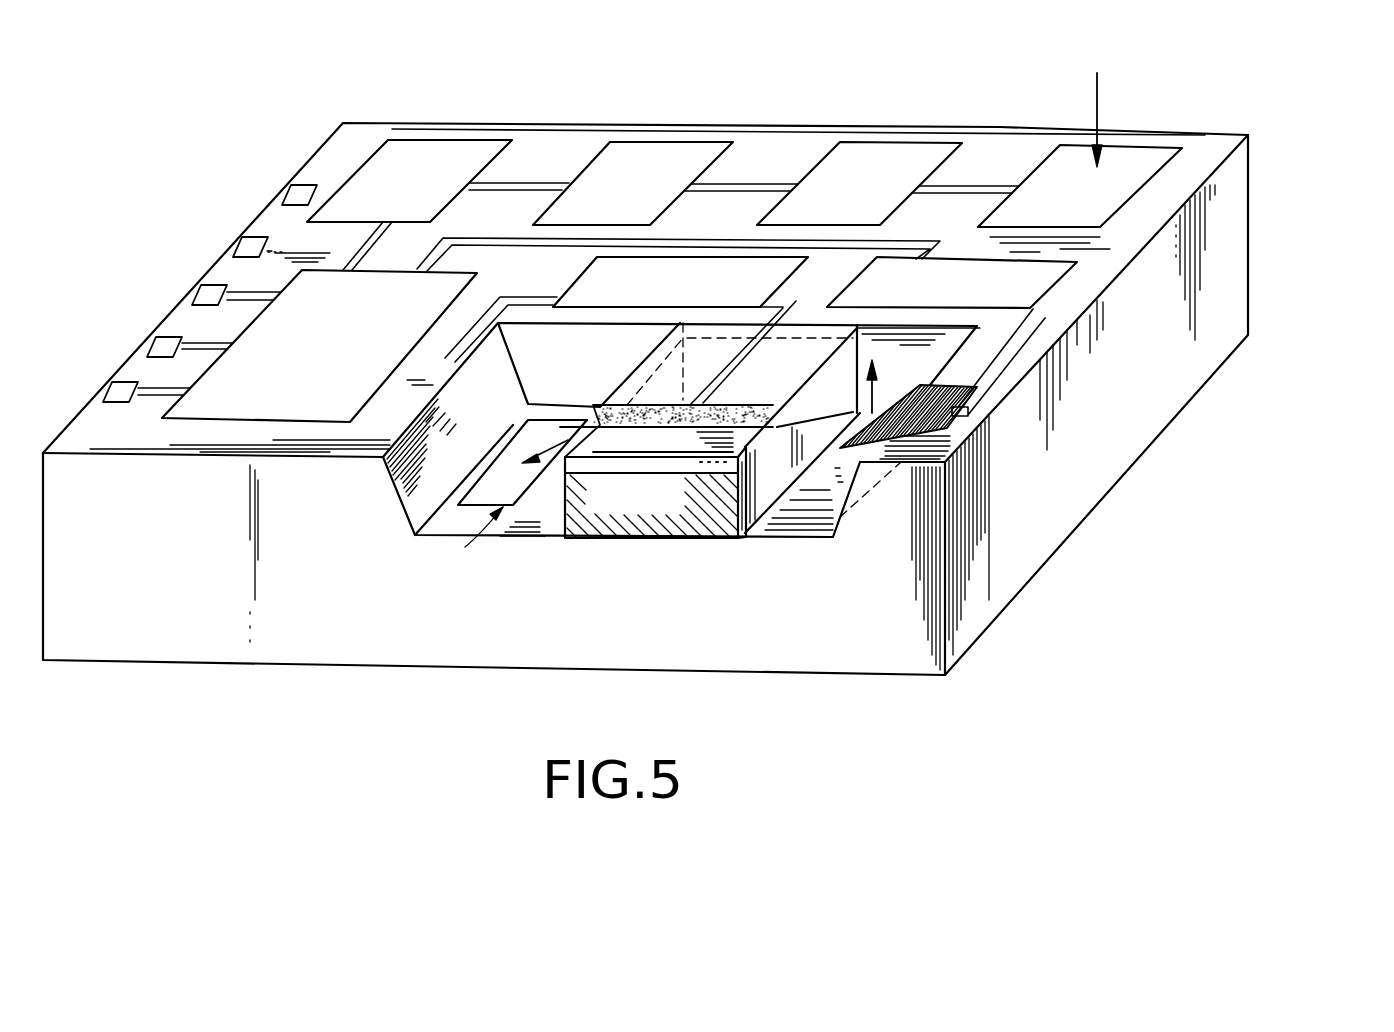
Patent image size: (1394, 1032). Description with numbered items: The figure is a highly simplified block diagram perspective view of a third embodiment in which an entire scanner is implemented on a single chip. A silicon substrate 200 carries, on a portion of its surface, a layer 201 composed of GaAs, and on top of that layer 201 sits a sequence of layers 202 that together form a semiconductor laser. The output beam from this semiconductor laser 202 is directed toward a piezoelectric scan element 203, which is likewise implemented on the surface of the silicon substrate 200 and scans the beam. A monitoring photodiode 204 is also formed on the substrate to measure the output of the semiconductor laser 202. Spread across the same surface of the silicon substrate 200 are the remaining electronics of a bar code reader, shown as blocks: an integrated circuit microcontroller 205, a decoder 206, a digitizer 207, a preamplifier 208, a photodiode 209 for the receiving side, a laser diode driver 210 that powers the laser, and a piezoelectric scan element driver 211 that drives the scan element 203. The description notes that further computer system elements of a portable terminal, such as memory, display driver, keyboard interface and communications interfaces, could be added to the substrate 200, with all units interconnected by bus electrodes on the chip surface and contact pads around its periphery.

The silicon substrate 200 is at (190, 648).
The layer composed of GaAs 201 is at (710, 528).
The sequence of layers forming a semiconductor laser 202 is at (748, 452).
The piezoelectric scan element 203 is at (955, 417).
The monitoring photodiode 204 is at (417, 543).
The integrated circuit microcontroller 205 is at (333, 392).
The decoder 206 is at (398, 154).
The digitizer 207 is at (672, 113).
The preamplifier 208 is at (873, 160).
The photodiode 209 is at (1124, 166).
The laser diode driver 210 is at (603, 308).
The piezoelectric scan element driver 211 is at (1047, 276).